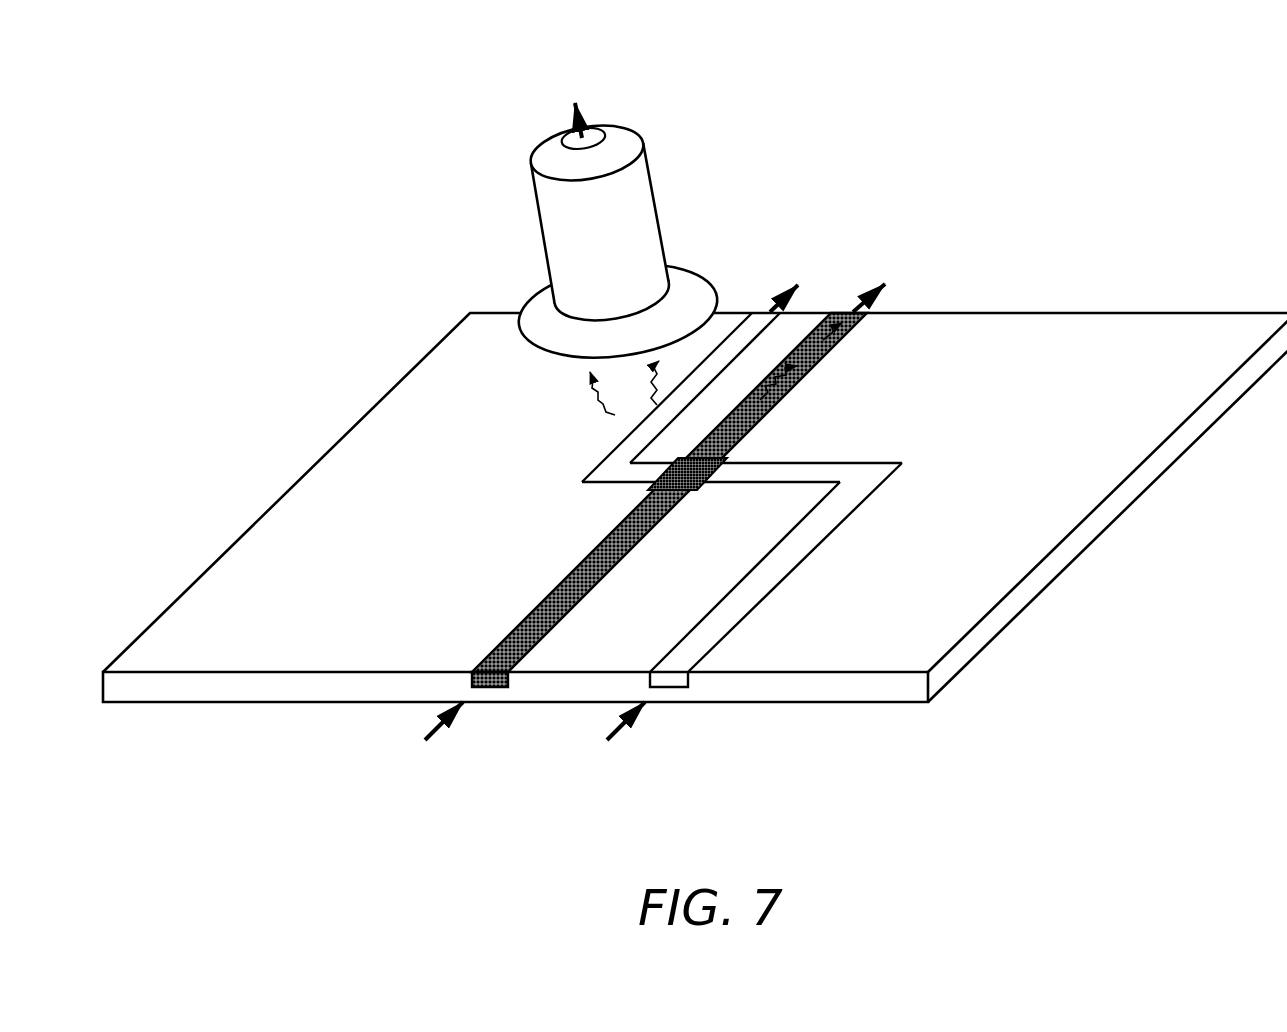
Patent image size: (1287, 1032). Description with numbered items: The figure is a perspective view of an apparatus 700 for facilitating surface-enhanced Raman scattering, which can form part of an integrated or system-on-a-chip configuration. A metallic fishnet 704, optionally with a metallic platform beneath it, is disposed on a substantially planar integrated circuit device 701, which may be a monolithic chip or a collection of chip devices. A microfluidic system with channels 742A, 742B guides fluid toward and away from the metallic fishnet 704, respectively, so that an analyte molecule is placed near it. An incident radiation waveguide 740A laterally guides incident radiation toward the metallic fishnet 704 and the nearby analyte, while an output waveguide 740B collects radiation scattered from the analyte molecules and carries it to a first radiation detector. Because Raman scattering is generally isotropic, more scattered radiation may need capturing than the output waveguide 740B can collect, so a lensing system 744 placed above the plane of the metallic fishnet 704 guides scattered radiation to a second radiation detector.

The apparatus 700 is at (285, 215).
The integrated circuit device 701 is at (263, 557).
The metallic fishnet 704 is at (740, 435).
The incident radiation waveguide 740A is at (557, 607).
The output waveguide 740B is at (857, 322).
The channel 742A is at (738, 612).
The channel 742B is at (610, 472).
The lensing system 744 is at (562, 208).